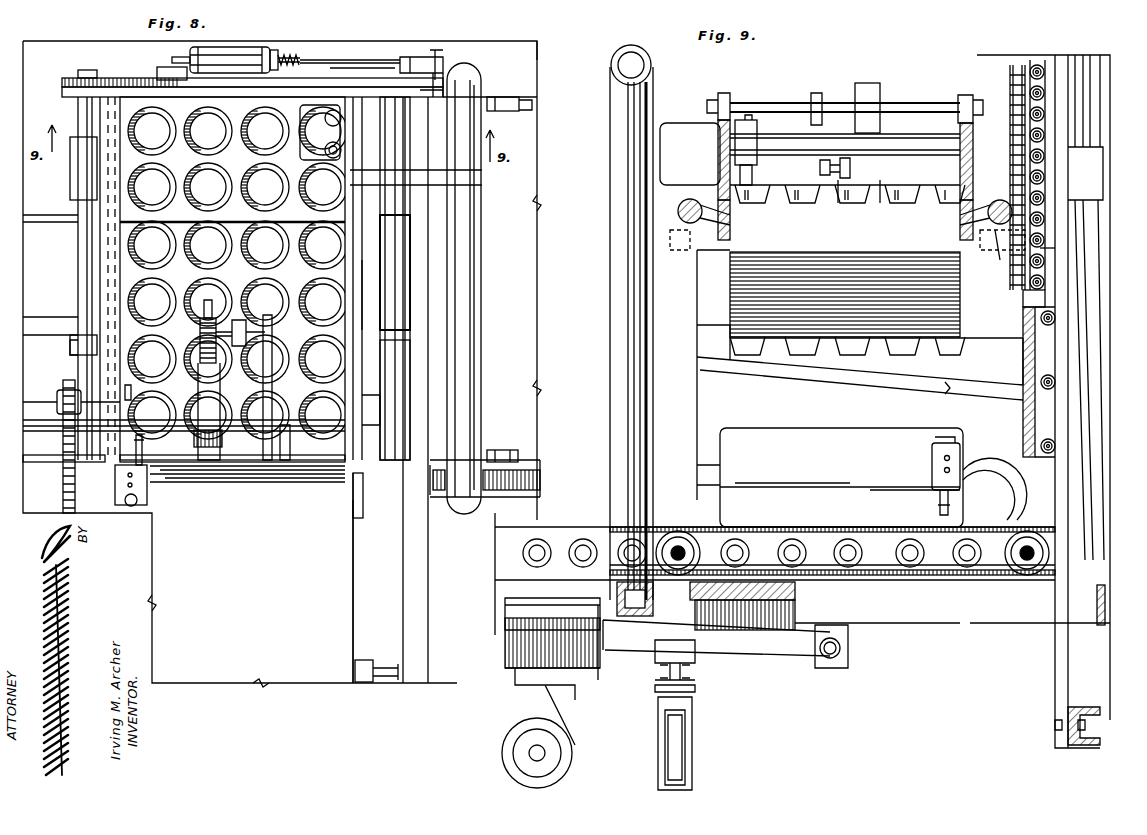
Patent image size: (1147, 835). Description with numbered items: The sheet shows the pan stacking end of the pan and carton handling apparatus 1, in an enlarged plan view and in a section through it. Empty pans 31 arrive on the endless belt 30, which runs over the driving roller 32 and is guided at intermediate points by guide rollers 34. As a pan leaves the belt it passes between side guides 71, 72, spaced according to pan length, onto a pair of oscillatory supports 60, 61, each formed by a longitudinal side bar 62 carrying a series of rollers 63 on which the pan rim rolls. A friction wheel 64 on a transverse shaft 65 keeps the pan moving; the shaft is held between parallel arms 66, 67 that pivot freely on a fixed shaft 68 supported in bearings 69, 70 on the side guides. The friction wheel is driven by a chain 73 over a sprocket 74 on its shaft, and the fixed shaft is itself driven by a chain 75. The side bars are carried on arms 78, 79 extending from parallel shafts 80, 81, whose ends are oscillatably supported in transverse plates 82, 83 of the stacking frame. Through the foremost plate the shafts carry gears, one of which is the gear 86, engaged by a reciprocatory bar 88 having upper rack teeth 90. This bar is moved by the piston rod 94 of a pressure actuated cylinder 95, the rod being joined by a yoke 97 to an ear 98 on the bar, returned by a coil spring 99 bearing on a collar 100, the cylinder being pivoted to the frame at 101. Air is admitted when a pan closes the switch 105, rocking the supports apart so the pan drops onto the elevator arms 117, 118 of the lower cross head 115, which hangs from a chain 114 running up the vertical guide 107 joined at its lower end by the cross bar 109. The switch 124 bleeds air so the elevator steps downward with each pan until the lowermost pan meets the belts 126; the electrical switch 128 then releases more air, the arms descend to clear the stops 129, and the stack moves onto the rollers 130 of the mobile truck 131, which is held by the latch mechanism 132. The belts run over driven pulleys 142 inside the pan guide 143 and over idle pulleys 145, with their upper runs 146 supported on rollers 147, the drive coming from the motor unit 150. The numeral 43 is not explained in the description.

In FIG. 8, the apparatus 1 is at (537, 41).
In FIG. 9, the apparatus 1 is at (1110, 57).
In FIG. 8, the endless belt 30 is at (345, 570).
In FIG. 8, the empty pans 31 is at (120, 270).
In FIG. 9, the empty pans 31 is at (940, 188).
In FIG. 8, the roller 32 is at (360, 520).
In FIG. 8, the guide rollers 34 is at (372, 660).
In FIG. 9, the chain 43 is at (1020, 65).
In FIG. 8, the oscillatory support 60 is at (78, 240).
In FIG. 9, the oscillatory support 60 is at (705, 248).
In FIG. 8, the oscillatory support 61 is at (380, 250).
In FIG. 9, the oscillatory support 61 is at (995, 250).
In FIG. 8, the longitudinal side bar 62 is at (365, 290).
In FIG. 9, the longitudinal side bar 62 is at (730, 233).
In FIG. 8, the rollers 63 is at (128, 395).
In FIG. 9, the rollers 63 is at (745, 205).
In FIG. 8, the friction wheel 64 is at (240, 320).
In FIG. 9, the friction wheel 64 is at (840, 205).
In FIG. 8, the transverse shaft 65 is at (258, 325).
In FIG. 9, the transverse shaft 65 is at (828, 165).
In FIG. 8, the arm 66 is at (230, 478).
In FIG. 9, the arm 66 is at (860, 83).
In FIG. 8, the arm 67 is at (293, 470).
In FIG. 9, the arm 67 is at (812, 105).
In FIG. 8, the fixed shaft 68 is at (335, 472).
In FIG. 9, the fixed shaft 68 is at (752, 105).
In FIG. 8, the bearing 69 is at (80, 395).
In FIG. 9, the bearing 69 is at (725, 93).
In FIG. 8, the bearing 70 is at (372, 410).
In FIG. 9, the bearing 70 is at (966, 93).
In FIG. 8, the side guide 71 is at (72, 187).
In FIG. 9, the side guide 71 is at (718, 152).
In FIG. 8, the side guide 72 is at (432, 181).
In FIG. 9, the side guide 72 is at (975, 160).
In FIG. 8, the chain 73 is at (200, 333).
In FIG. 9, the chain 73 is at (885, 205).
In FIG. 8, the sprocket 74 is at (205, 318).
In FIG. 9, the sprocket 74 is at (1010, 97).
In FIG. 8, the chain 75 is at (76, 490).
In FIG. 9, the chain 75 is at (1012, 176).
In FIG. 9, the arm 78 is at (715, 200).
In FIG. 9, the arm 79 is at (960, 232).
In FIG. 8, the shaft 80 is at (78, 300).
In FIG. 9, the shaft 80 is at (685, 222).
In FIG. 8, the shaft 81 is at (392, 315).
In FIG. 9, the shaft 81 is at (1010, 214).
In FIG. 8, the transverse plate 82 is at (270, 480).
In FIG. 8, the transverse plate 83 is at (150, 78).
In FIG. 8, the gear 86 is at (85, 70).
In FIG. 8, the bar 88 is at (340, 70).
In FIG. 8, the rack teeth 90 is at (115, 78).
In FIG. 8, the piston rod 94 is at (392, 67).
In FIG. 8, the pressure actuated cylinder 95 is at (235, 50).
In FIG. 8, the yoke 97 is at (420, 57).
In FIG. 8, the ear 98 is at (470, 90).
In FIG. 8, the coil spring 99 is at (290, 55).
In FIG. 8, the collar 100 is at (300, 60).
In FIG. 8, the pivotal connection 101 is at (176, 57).
In FIG. 8, the switch 105 is at (295, 100).
In FIG. 9, the vertical guide 107 is at (1070, 115).
In FIG. 9, the cross bar 109 is at (1068, 720).
In FIG. 9, the chain 114 is at (1045, 251).
In FIG. 9, the lower cross head 115 is at (1023, 368).
In FIG. 8, the arm 117 is at (40, 330).
In FIG. 9, the arm 117 is at (940, 388).
In FIG. 8, the arm 118 is at (60, 213).
In FIG. 8, the switch 124 is at (330, 150).
In FIG. 9, the belts 126 is at (915, 580).
In FIG. 8, the electrical switch 128 is at (140, 505).
In FIG. 9, the electrical switch 128 is at (962, 460).
In FIG. 9, the stops 129 is at (705, 335).
In FIG. 8, the rollers 130 is at (525, 103).
In FIG. 9, the rollers 130 is at (590, 540).
In FIG. 8, the mobile truck 131 is at (530, 97).
In FIG. 9, the mobile truck 131 is at (495, 598).
In FIG. 9, the latch mechanism 132 is at (735, 640).
In FIG. 9, the driven pulleys 142 is at (680, 540).
In FIG. 9, the pan guide 143 is at (735, 447).
In FIG. 9, the idle pulleys 145 is at (1030, 530).
In FIG. 9, the upper runs 146 is at (770, 530).
In FIG. 9, the rollers 147 is at (855, 535).
In FIG. 9, the motor unit 150 is at (995, 480).